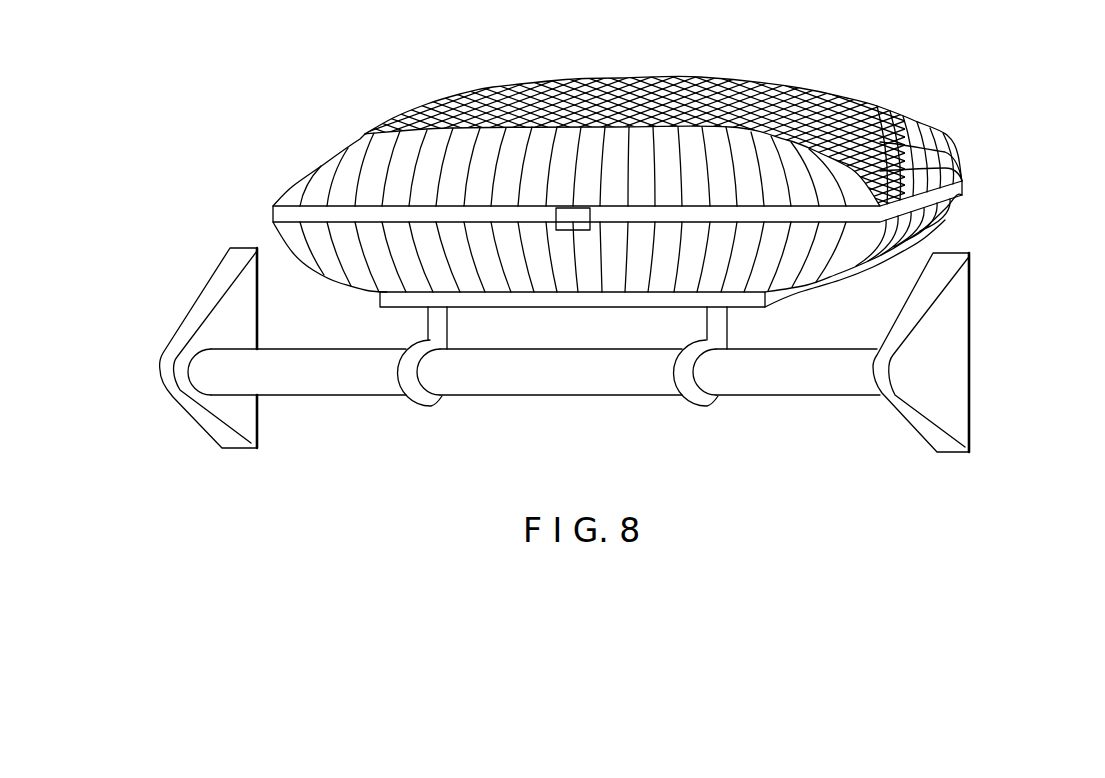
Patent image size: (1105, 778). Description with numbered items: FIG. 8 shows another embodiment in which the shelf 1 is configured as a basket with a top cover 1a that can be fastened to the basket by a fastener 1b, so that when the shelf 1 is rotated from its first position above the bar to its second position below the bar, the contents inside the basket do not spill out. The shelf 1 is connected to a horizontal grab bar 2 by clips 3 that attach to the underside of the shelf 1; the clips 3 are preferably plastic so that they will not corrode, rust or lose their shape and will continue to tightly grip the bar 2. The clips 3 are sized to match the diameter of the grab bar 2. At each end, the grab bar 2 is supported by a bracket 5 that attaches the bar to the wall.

The shelf 1 is at (952, 218).
The top cover 1a is at (872, 105).
The fastener 1b is at (562, 208).
The grab bar 2 is at (520, 398).
The clip 3 is at (398, 381).
The bracket 5 is at (168, 416).